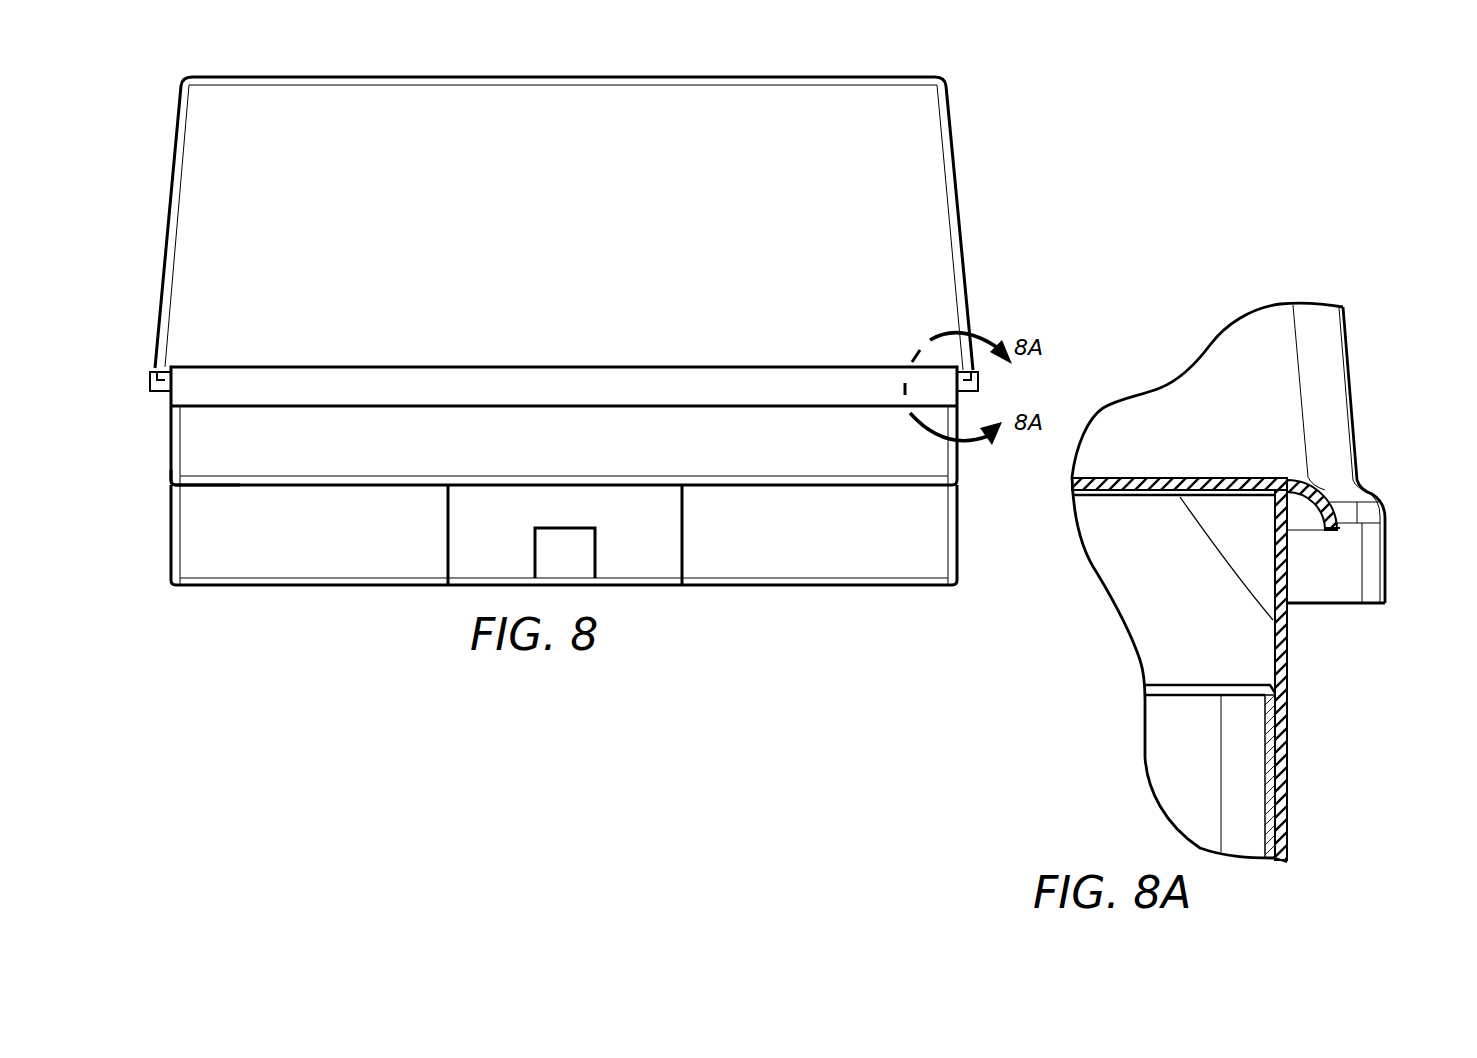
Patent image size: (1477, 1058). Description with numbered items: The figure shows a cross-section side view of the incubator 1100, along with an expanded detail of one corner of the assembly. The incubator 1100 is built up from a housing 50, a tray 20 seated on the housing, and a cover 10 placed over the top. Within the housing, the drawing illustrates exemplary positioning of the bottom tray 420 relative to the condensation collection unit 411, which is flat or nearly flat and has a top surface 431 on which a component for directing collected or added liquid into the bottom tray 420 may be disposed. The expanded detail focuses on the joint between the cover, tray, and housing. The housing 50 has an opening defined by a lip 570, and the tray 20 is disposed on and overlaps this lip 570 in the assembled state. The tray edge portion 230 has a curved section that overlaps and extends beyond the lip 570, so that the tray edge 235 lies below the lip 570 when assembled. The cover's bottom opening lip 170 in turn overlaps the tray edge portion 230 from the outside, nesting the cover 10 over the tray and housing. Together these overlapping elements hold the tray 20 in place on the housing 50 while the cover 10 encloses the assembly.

In FIG. 8, the incubator 1100 is at (468, 62).
In FIG. 8, the cover 10 is at (992, 168).
In FIG. 8A, the cover 10 is at (1357, 347).
In FIG. 8, the tray 20 is at (226, 367).
In FIG. 8A, the tray 20 is at (1221, 479).
In FIG. 8, the top surface 431 is at (218, 483).
In FIG. 8, the bottom tray 420 is at (486, 541).
In FIG. 8, the condensation collection unit 411 is at (745, 448).
In FIG. 8A, the tray edge portion 230 is at (1323, 492).
In FIG. 8A, the tray edge 235 is at (1347, 526).
In FIG. 8A, the opening lip 170 is at (1386, 583).
In FIG. 8A, the lip 570 is at (1273, 620).
In FIG. 8A, the housing 50 is at (1288, 739).